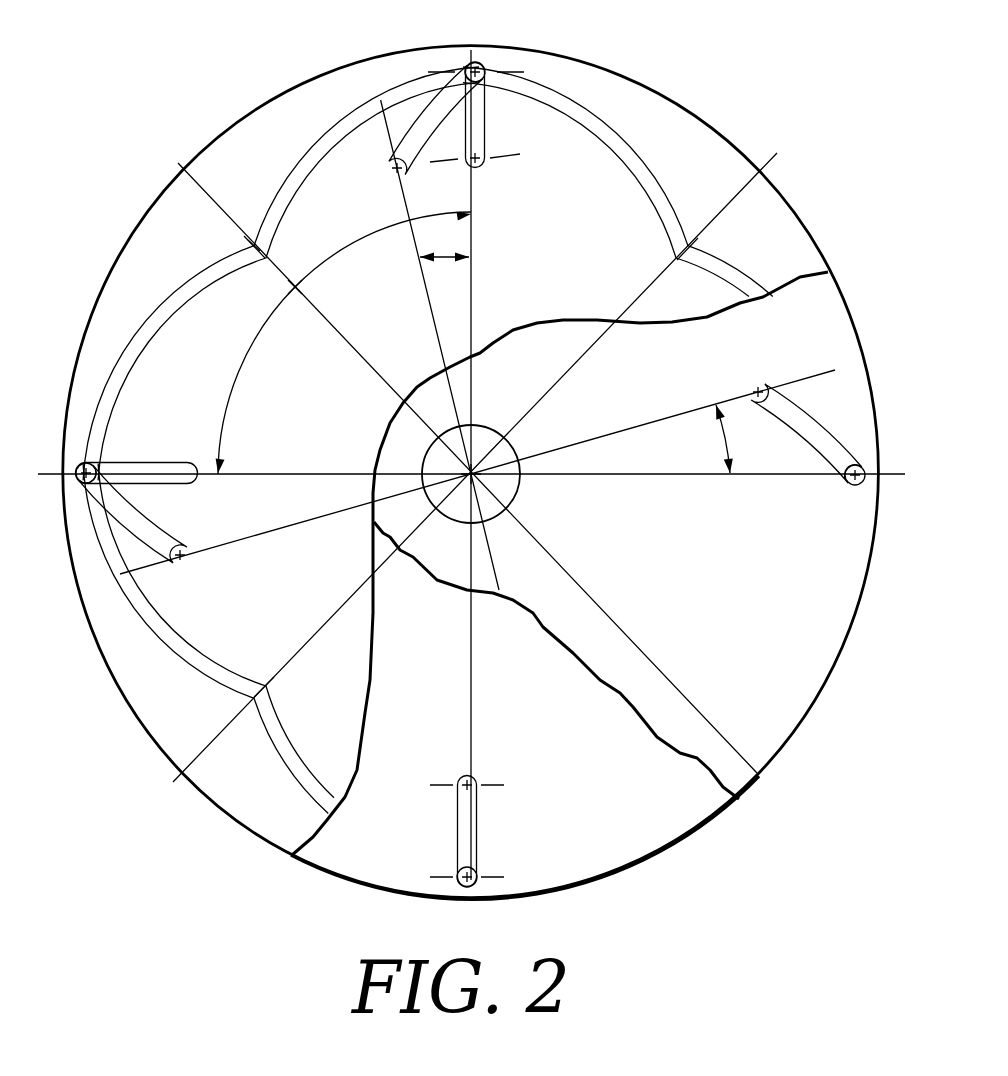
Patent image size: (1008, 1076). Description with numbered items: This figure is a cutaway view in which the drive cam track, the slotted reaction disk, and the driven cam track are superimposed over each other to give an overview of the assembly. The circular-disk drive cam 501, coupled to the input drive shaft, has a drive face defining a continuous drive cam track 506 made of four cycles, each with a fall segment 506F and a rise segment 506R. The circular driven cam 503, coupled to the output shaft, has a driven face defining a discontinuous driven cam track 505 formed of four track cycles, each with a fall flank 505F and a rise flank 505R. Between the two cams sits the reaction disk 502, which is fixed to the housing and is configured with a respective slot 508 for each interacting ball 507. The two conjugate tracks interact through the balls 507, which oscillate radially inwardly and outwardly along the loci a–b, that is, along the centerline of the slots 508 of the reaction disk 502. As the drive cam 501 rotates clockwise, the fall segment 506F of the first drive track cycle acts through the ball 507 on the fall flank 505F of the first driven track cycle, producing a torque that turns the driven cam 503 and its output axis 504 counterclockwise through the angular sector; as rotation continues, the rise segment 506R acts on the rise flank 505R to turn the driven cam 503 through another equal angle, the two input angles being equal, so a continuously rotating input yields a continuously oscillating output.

The drive cam 501 is at (133, 716).
The reaction disk 502 is at (621, 876).
The driven cam 503 is at (832, 278).
The driven cam output axis 504 is at (518, 497).
The driven cam track 505 is at (840, 410).
The fall flank 505F is at (440, 110).
The rise flank 505R is at (405, 127).
The drive cam track 506 is at (233, 227).
The fall segment 506F is at (307, 157).
The rise segment 506R is at (194, 281).
The ball 507 is at (484, 70).
The slot 508 is at (497, 112).
The locus endpoint a is at (486, 74).
The locus endpoint b is at (480, 160).